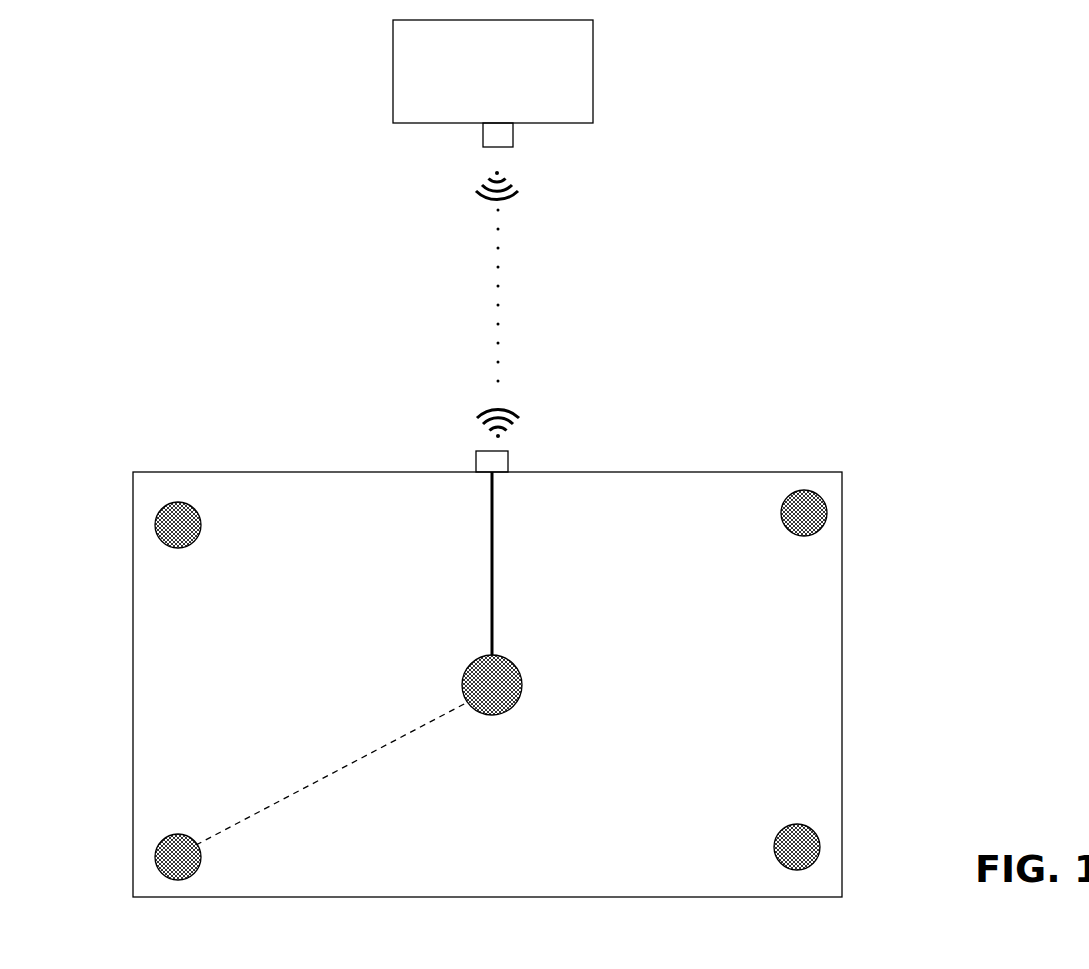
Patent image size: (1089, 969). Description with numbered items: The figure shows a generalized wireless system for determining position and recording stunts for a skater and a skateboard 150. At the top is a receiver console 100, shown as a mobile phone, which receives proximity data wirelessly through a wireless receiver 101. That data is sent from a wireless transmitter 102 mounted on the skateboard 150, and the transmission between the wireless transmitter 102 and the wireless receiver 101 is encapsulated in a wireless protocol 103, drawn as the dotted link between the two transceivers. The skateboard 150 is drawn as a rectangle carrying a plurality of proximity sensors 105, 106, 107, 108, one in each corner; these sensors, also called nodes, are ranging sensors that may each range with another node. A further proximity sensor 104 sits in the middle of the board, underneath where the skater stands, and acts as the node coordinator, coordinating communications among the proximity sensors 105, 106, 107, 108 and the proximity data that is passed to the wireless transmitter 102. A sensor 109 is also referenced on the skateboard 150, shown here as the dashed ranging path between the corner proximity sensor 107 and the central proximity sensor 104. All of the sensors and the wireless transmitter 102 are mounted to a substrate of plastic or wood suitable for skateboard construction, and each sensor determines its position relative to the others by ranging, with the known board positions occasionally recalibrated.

The receiver console 100 is at (390, 99).
The wireless receiver 101 is at (479, 149).
The wireless transmitter 102 is at (466, 446).
The wireless protocol 103 is at (478, 312).
The proximity sensor 104 is at (472, 657).
The proximity sensor 105 is at (150, 500).
The proximity sensor 106 is at (770, 498).
The proximity sensor 107 is at (150, 835).
The proximity sensor 108 is at (770, 835).
The skateboard sensor 109 is at (383, 735).
The skateboard 150 is at (845, 562).